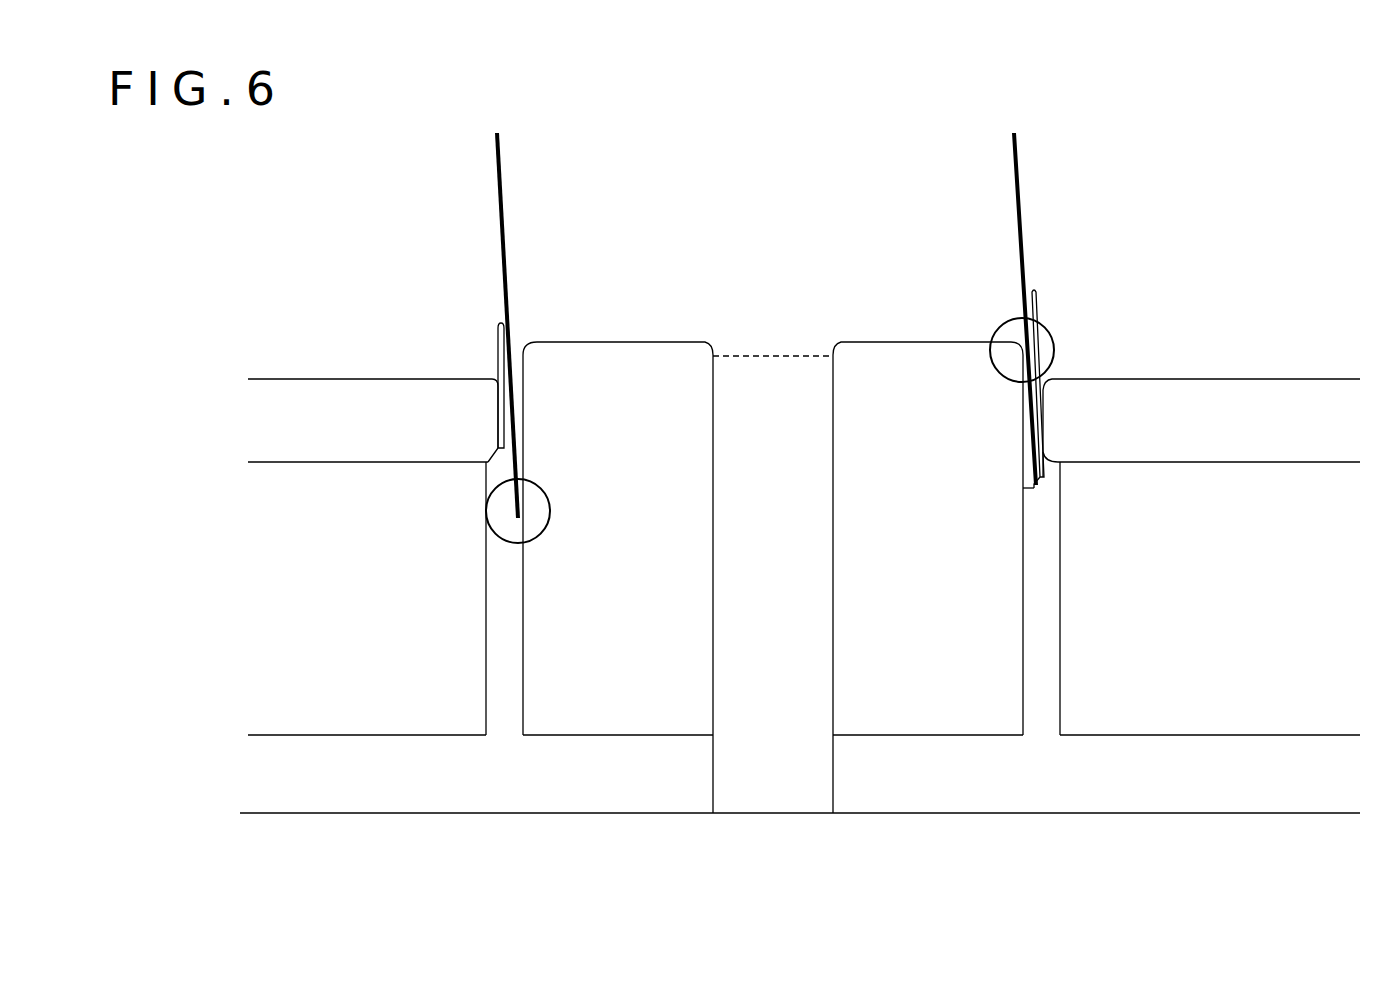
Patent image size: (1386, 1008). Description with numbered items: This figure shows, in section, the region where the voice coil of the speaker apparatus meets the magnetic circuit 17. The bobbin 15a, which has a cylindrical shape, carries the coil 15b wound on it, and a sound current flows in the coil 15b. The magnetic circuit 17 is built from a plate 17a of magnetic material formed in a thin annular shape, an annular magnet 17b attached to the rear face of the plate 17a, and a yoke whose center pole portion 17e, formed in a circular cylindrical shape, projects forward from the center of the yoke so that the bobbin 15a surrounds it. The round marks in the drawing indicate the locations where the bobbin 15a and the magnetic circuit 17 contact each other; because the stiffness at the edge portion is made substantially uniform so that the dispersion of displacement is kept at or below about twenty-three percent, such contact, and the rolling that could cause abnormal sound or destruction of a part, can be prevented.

The bobbin 15a is at (958, 226).
The coil 15b is at (1033, 302).
The magnetic circuit 17 is at (1253, 262).
The plate 17a is at (1192, 395).
The magnet 17b is at (1288, 470).
The center pole portion 17e is at (921, 780).